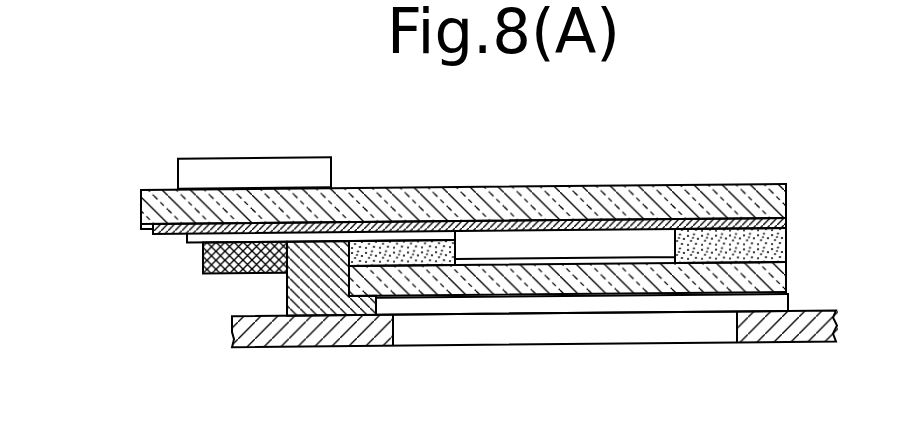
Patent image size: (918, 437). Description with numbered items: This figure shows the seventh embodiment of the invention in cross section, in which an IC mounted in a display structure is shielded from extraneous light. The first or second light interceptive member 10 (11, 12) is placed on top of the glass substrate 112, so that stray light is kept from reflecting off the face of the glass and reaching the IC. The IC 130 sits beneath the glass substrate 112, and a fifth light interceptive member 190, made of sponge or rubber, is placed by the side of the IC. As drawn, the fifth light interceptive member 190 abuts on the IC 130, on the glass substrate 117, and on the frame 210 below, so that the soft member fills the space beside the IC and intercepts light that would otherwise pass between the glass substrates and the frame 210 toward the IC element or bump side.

The first light interceptive member 10 is at (183, 172).
The second light interceptive member 11 is at (183, 172).
The second light interceptive member 12 is at (178, 175).
The glass substrate 112 is at (772, 202).
The glass substrate 117 is at (772, 282).
The IC 130 is at (203, 267).
The fifth light interceptive member 190 is at (287, 302).
The frame 210 is at (357, 337).